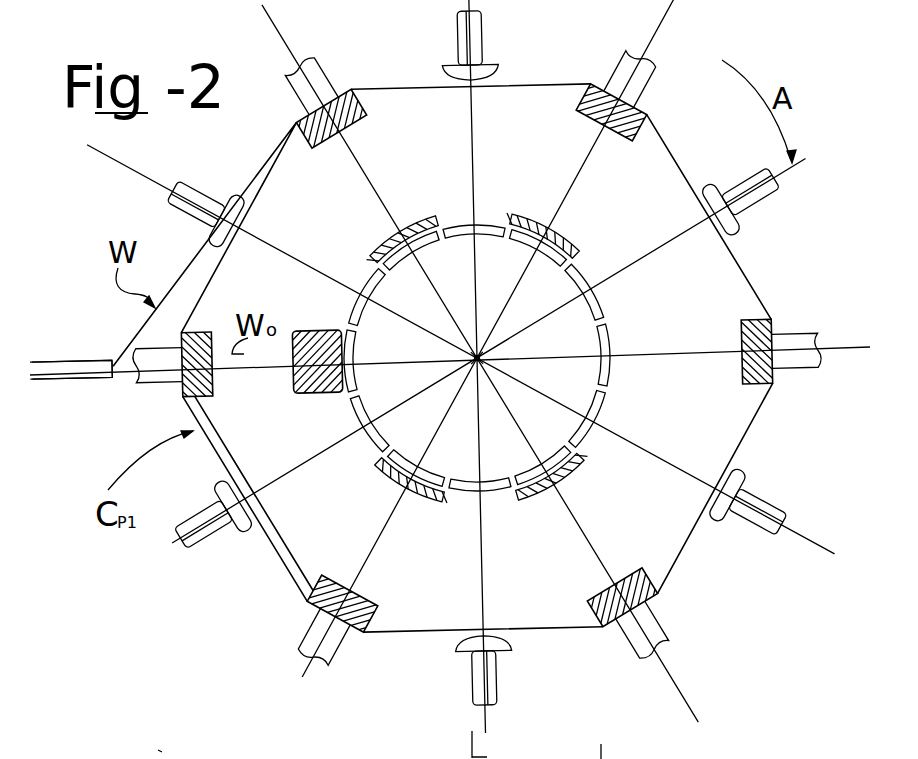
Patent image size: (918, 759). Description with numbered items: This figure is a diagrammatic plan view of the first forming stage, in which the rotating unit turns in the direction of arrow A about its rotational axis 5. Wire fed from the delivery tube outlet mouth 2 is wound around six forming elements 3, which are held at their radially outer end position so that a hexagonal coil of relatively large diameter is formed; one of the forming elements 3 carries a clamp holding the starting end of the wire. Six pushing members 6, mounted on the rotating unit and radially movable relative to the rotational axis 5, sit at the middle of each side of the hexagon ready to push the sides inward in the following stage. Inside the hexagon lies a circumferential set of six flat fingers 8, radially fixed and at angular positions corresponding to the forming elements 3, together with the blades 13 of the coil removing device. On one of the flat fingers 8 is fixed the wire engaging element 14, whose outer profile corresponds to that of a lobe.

The delivery tube outlet mouth 2 is at (88, 378).
The forming element 3 is at (352, 120).
The rotational axis 5 is at (484, 360).
The pushing member 6 is at (460, 42).
The flat finger 8 is at (396, 238).
The blade 13 is at (468, 233).
The wire engaging element 14 is at (318, 393).